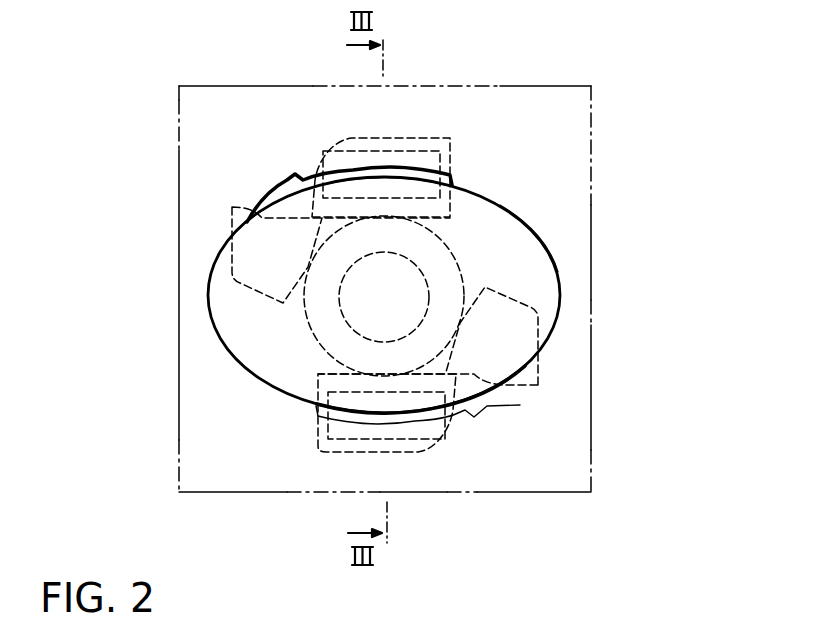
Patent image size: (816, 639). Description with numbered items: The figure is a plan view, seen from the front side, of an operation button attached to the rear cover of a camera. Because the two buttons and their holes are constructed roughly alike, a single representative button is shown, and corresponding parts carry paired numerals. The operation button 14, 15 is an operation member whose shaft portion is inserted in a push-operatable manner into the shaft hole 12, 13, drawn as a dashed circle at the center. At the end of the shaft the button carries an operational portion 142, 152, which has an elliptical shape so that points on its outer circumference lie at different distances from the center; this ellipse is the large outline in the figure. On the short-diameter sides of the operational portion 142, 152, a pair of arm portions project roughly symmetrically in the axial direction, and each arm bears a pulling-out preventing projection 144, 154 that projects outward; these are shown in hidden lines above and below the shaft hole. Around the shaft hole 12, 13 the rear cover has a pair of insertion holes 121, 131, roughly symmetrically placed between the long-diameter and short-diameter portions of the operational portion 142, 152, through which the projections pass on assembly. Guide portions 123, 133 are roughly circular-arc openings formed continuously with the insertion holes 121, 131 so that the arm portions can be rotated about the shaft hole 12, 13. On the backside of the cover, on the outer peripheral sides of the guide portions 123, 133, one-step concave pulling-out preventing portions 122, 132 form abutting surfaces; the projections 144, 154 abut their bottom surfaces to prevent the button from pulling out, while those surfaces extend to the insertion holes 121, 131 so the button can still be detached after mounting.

The shaft hole 12 is at (278, 296).
The shaft hole 13 is at (360, 317).
The operation button 14 is at (445, 295).
The operation button 15 is at (547, 263).
The insertion hole 121 is at (386, 298).
The insertion hole 131 is at (280, 188).
The pulling-out preventing portion 122 is at (403, 298).
The pulling-out preventing portion 132 is at (450, 138).
The guide portion 123 is at (385, 300).
The guide portion 133 is at (232, 207).
The operational portion 142 is at (605, 221).
The operational portion 152 is at (530, 230).
The pulling-out preventing projection 144 is at (419, 275).
The pulling-out preventing projection 154 is at (407, 151).